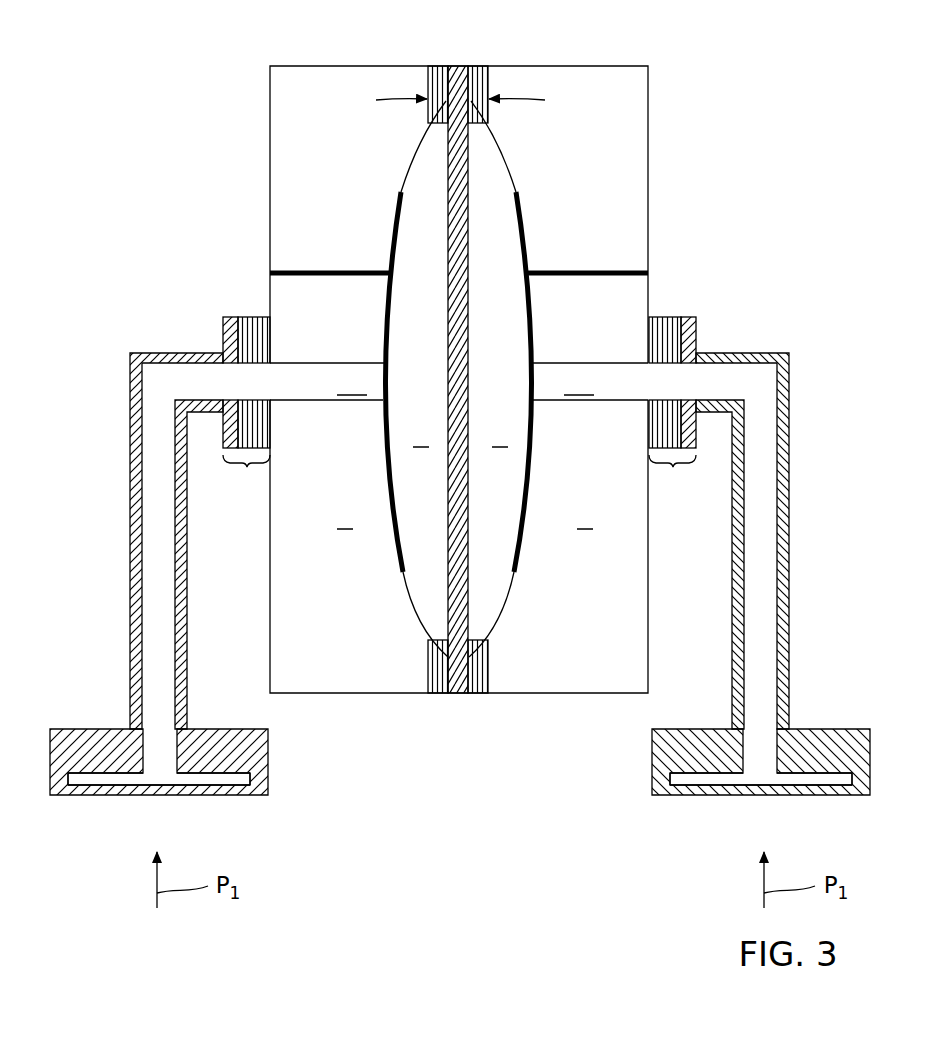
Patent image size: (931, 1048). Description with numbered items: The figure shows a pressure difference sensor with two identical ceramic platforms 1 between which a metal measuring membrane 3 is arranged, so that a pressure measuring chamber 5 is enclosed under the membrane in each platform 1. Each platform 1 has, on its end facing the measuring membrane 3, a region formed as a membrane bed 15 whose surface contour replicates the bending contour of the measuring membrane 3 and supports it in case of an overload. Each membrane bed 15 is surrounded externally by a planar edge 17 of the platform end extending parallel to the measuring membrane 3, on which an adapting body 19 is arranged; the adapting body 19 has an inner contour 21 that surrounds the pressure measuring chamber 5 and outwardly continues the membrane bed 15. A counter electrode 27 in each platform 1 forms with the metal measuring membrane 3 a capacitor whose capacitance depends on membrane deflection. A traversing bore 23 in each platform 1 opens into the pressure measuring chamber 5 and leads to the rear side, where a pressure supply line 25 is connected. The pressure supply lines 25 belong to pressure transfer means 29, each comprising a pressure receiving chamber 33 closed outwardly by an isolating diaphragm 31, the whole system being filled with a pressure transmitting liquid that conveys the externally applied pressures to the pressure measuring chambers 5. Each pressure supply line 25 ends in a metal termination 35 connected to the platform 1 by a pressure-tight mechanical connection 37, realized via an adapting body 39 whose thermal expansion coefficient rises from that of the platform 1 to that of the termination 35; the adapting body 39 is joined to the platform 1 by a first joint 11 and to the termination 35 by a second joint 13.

The platform 1 is at (459, 379).
The measuring membrane 3 is at (459, 66).
The pressure measuring chamber 5 is at (460, 434).
The first joint 11 is at (488, 682).
The second joint 13 is at (467, 697).
The membrane bed 15 is at (402, 293).
The planar edge 17 is at (461, 103).
The adapting body 19 is at (478, 66).
The inner contour 21 is at (478, 124).
The bore 23 is at (459, 381).
The pressure supply line 25 is at (782, 455).
The counter electrode 27 is at (526, 219).
The pressure transfer means 29 is at (110, 584).
The isolating diaphragm 31 is at (822, 786).
The pressure receiving chamber 33 is at (703, 779).
The termination 35 is at (695, 333).
The pressure-tight mechanical connection 37 is at (459, 475).
The adapting body 39 is at (672, 316).